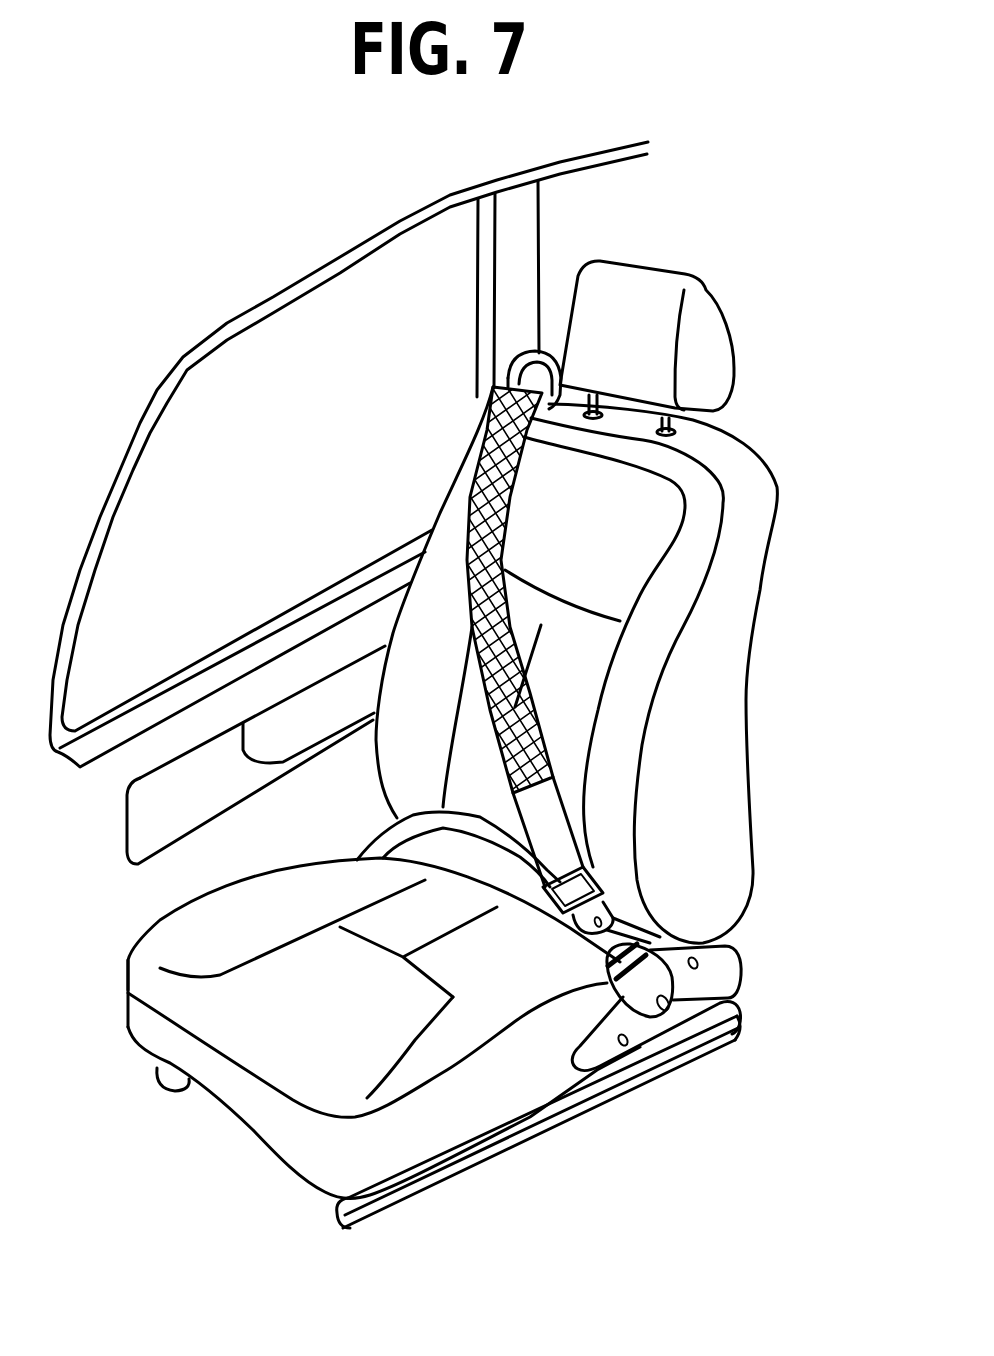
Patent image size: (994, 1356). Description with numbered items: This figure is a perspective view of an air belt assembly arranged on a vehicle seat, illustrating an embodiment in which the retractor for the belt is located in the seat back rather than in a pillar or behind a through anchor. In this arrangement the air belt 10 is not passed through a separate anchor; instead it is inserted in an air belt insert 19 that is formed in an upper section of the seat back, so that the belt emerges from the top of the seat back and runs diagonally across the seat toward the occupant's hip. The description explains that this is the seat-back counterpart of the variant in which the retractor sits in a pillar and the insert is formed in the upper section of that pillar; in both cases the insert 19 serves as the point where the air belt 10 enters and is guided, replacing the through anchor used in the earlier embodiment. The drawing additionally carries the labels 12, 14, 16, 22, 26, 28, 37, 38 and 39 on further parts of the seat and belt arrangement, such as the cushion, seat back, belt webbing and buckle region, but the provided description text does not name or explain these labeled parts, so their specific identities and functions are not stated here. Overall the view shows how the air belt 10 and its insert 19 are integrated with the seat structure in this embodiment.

The air belt 10 is at (752, 716).
The seat cushion 12 is at (333, 1025).
The seat back side bolster 14 is at (686, 574).
The seat back 16 is at (507, 503).
The air belt insert 19 is at (514, 350).
The lap belt 22 is at (433, 810).
The tongue 26 is at (604, 884).
The buckle 28 is at (653, 983).
The headrest 37 is at (703, 330).
The belt guide 38 is at (542, 356).
The shoulder belt 39 is at (492, 400).